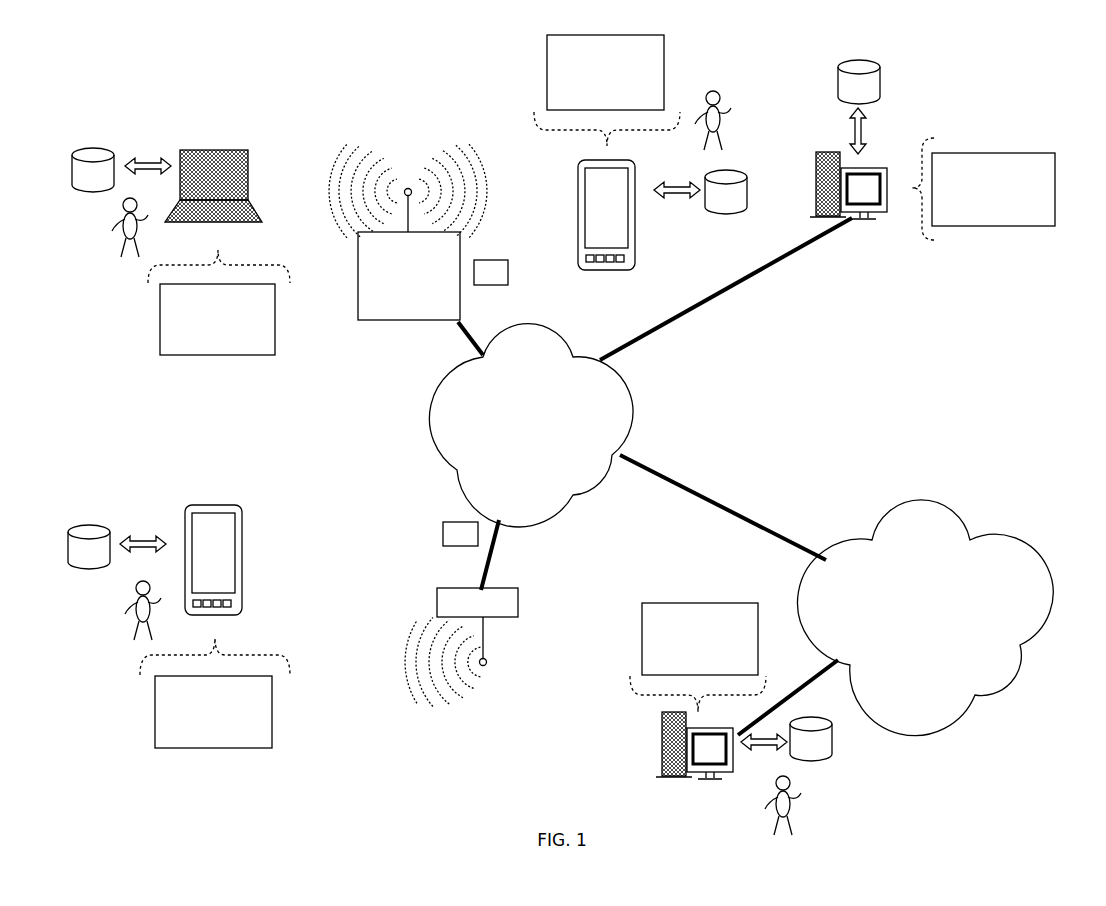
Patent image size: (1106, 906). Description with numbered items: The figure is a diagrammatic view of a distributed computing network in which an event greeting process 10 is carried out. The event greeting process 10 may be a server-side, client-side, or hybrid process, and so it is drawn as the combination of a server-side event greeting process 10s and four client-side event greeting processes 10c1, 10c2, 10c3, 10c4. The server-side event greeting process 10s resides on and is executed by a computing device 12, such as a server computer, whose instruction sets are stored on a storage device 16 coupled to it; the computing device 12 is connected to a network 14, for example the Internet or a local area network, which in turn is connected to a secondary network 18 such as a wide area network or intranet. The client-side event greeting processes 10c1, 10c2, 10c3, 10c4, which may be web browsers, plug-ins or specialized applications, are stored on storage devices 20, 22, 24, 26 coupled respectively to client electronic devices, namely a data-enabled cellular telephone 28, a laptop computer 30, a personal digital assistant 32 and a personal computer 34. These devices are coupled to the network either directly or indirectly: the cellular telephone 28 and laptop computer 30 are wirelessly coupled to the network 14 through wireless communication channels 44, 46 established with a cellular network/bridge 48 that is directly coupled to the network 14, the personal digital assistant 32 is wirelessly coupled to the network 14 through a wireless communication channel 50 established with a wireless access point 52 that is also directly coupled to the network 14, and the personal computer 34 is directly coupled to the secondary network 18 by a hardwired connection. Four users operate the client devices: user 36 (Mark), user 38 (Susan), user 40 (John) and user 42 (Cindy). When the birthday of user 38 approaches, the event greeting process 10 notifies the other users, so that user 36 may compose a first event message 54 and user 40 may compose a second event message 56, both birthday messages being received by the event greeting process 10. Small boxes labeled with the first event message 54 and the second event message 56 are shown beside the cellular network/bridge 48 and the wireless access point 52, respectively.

The event greeting process 10 is at (960, 64).
The server-side event greeting process 10s is at (1056, 180).
The client-side event greeting process 10c1 is at (665, 92).
The client-side event greeting process 10c2 is at (275, 308).
The client-side event greeting process 10c3 is at (273, 692).
The client-side event greeting process 10c4 is at (759, 652).
The computing device 12 is at (818, 168).
The network 14 is at (531, 425).
The storage device 16 is at (859, 107).
The secondary network 18 is at (926, 618).
The storage device 20 is at (700, 192).
The storage device 22 is at (121, 170).
The storage device 24 is at (117, 547).
The storage device 26 is at (786, 739).
The data-enabled cellular telephone 28 is at (636, 176).
The laptop computer 30 is at (250, 158).
The personal digital assistant 32 is at (245, 570).
The personal computer 34 is at (660, 742).
The user 36 is at (730, 106).
The user 38 is at (98, 217).
The user 40 is at (124, 598).
The user 42 is at (815, 800).
The wireless communication channel 44 is at (532, 183).
The wireless communication channel 46 is at (316, 154).
The cellular network/bridge 48 is at (357, 258).
The wireless communication channel 50 is at (343, 590).
The wireless access point 52 is at (519, 603).
The first event message 54 is at (508, 272).
The second event message 56 is at (443, 533).